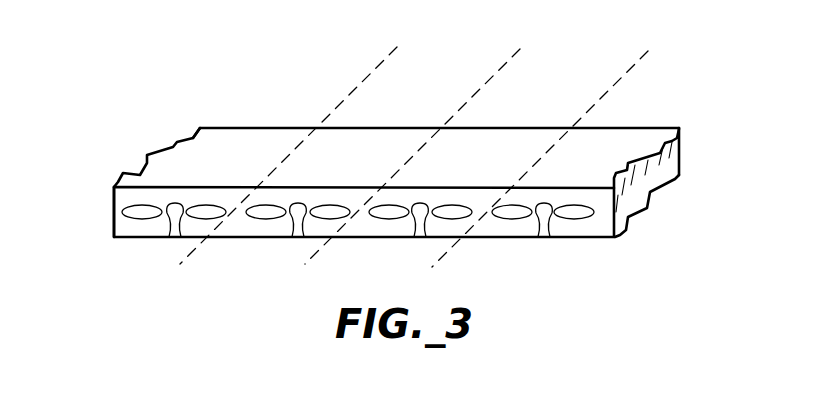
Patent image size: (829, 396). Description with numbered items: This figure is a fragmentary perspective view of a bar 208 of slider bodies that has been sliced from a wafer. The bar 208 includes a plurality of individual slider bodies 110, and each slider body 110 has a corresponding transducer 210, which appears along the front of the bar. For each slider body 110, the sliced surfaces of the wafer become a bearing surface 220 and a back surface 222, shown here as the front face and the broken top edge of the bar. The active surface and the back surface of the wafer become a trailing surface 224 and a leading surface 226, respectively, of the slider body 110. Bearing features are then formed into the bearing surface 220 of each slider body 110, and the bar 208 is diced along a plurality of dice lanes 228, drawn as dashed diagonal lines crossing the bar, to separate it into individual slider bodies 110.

The slider body 110 is at (243, 132).
The bar 208 is at (646, 104).
The transducer 210 is at (173, 237).
The bearing surface 220 is at (152, 237).
The back surface 222 is at (140, 175).
The trailing surface 224 is at (120, 228).
The leading surface 226 is at (200, 128).
The dice lanes 228 is at (360, 84).